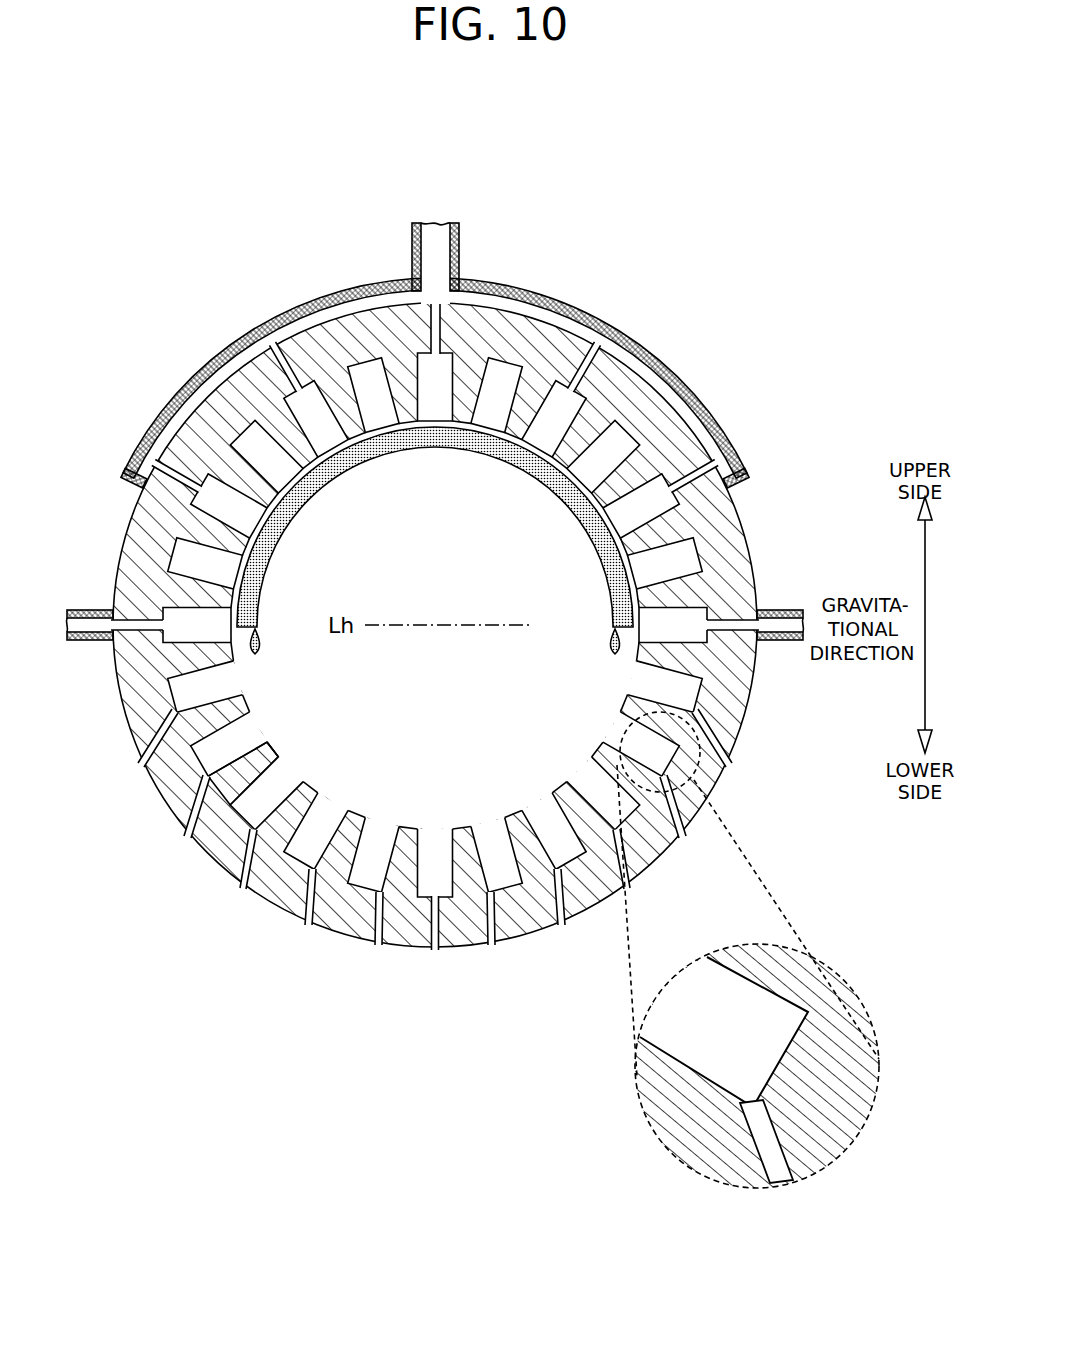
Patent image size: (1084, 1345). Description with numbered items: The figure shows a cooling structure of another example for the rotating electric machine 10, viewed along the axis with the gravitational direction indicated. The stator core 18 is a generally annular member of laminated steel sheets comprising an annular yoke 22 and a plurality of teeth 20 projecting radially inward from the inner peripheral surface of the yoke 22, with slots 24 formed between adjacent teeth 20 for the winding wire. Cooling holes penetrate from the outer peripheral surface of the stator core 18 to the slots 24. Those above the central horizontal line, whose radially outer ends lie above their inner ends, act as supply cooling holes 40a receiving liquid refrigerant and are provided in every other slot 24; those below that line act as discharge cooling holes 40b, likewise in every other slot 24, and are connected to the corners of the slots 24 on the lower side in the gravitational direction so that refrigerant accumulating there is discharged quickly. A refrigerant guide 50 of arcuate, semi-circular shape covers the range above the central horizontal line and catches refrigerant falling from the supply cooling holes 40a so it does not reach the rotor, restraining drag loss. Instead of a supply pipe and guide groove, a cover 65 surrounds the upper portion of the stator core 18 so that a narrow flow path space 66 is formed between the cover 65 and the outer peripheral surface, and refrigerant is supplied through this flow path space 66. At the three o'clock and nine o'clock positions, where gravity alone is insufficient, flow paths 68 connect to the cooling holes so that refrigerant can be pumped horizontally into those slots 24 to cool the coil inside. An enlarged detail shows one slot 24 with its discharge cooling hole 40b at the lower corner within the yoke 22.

The rotating electric machine 10 is at (604, 185).
The stator core 18 is at (157, 813).
The teeth 20 is at (276, 753).
The yoke 22 is at (140, 710).
The slot 24 is at (278, 784).
The supply cooling hole 40a is at (282, 352).
The discharge cooling hole 40b is at (314, 925).
The refrigerant guide 50 is at (481, 465).
The cover 65 is at (505, 283).
The flow path space 66 is at (617, 368).
The flow path 68 is at (80, 609).